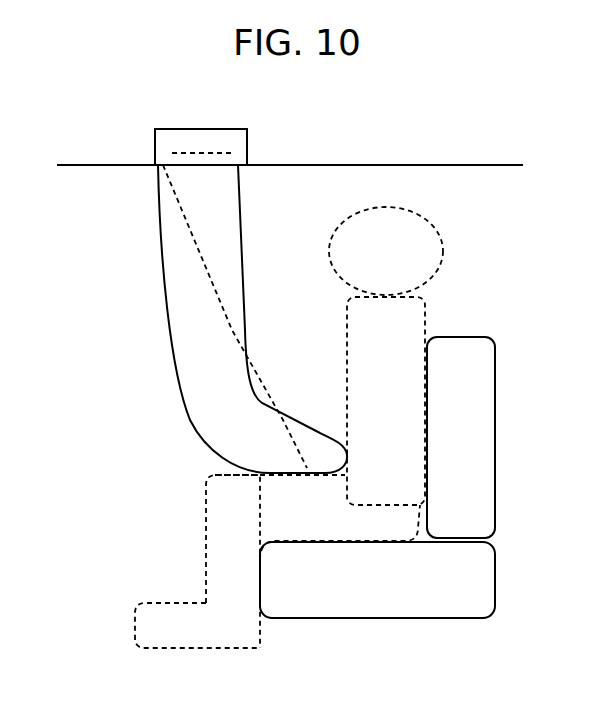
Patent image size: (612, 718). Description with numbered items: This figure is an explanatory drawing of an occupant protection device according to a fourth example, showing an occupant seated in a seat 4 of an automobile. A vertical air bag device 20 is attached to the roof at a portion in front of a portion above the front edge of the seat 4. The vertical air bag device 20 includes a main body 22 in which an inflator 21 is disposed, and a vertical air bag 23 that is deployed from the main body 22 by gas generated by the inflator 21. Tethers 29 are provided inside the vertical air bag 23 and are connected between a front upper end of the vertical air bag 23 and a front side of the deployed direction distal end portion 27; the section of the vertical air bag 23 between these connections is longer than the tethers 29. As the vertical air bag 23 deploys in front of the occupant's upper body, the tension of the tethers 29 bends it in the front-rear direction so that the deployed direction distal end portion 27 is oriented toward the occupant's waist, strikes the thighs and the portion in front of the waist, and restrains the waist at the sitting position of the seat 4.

The seat 4 is at (465, 575).
The vertical air bag device 20 is at (90, 371).
The inflator 21 is at (231, 153).
The main body 22 is at (155, 143).
The vertical air bag 23 is at (163, 298).
The deployed direction distal end portion 27 is at (318, 470).
The tethers 29 is at (195, 245).